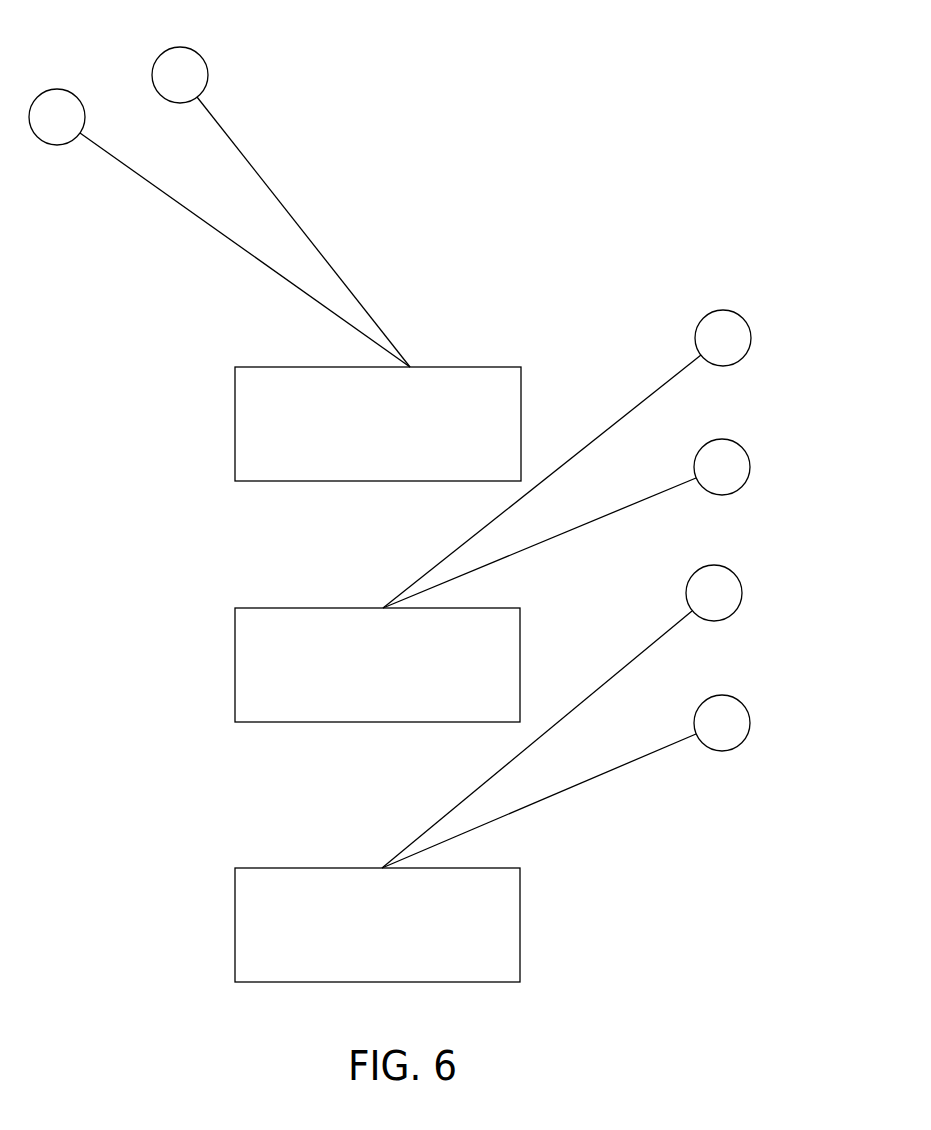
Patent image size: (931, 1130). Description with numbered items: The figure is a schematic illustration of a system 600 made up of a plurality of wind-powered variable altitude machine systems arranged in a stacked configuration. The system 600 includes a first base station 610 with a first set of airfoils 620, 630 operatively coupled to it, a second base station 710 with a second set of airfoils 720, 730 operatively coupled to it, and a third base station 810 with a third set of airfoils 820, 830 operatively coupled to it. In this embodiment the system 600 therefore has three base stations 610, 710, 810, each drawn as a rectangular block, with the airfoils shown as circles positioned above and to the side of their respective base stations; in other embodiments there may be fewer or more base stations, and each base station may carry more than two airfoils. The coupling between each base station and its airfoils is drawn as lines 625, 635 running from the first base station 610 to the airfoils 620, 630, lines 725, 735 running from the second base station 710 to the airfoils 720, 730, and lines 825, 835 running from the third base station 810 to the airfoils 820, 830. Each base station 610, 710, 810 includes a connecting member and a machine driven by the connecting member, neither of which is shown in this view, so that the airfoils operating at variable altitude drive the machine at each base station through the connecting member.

The system 600 is at (557, 165).
The first base station 610 is at (275, 868).
The airfoil 620 is at (714, 565).
The first connection 625 is at (633, 655).
The airfoil 630 is at (722, 695).
The second connection 635 is at (590, 778).
The second base station 710 is at (273, 608).
The airfoil 720 is at (723, 310).
The third connection 725 is at (657, 385).
The airfoil 730 is at (722, 439).
The fourth connection 735 is at (580, 528).
The third base station 810 is at (447, 367).
The airfoil 820 is at (58, 89).
The fifth connection 825 is at (160, 195).
The airfoil 830 is at (182, 47).
The sixth connection 835 is at (288, 212).